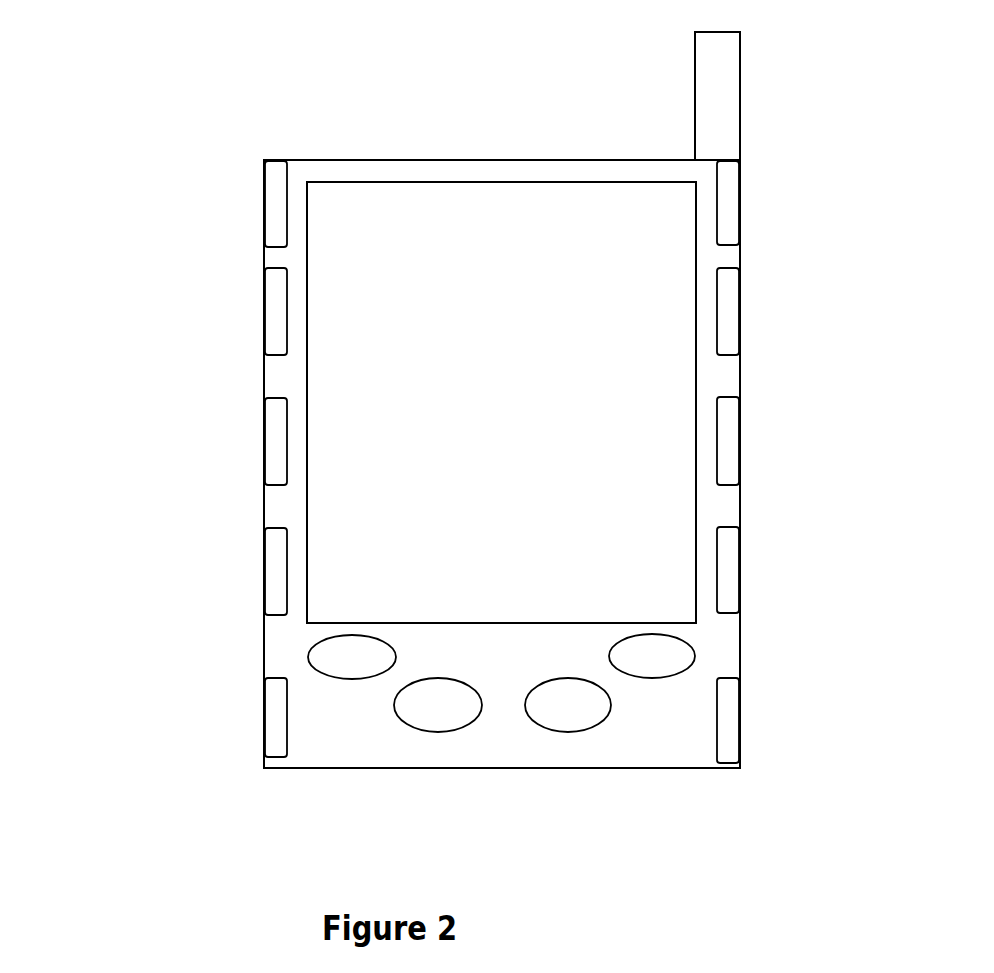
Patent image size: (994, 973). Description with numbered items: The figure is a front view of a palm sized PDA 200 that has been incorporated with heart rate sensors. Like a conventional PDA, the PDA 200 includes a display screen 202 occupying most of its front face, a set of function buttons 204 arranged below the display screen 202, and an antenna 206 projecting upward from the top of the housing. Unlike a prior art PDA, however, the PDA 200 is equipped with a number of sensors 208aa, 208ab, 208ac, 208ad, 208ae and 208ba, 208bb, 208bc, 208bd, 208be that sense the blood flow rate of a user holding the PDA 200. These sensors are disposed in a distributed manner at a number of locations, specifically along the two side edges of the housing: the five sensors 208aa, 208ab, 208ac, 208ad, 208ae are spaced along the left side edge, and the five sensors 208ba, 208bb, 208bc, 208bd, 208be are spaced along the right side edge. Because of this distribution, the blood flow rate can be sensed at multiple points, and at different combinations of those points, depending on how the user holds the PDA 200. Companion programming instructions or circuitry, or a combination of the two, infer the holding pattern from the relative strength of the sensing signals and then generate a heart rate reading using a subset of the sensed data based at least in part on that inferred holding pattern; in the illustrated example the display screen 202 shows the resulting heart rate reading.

The PDA 200 is at (88, 53).
The display screen 202 is at (525, 205).
The function buttons 204 is at (547, 722).
The antenna 206 is at (718, 115).
The sensor 208aa is at (265, 205).
The sensor 208ab is at (285, 332).
The sensor 208ac is at (265, 440).
The sensor 208ad is at (263, 575).
The sensor 208ae is at (265, 718).
The sensor 208ba is at (741, 225).
The sensor 208bb is at (742, 310).
The sensor 208bc is at (742, 437).
The sensor 208bd is at (742, 575).
The sensor 208be is at (742, 697).